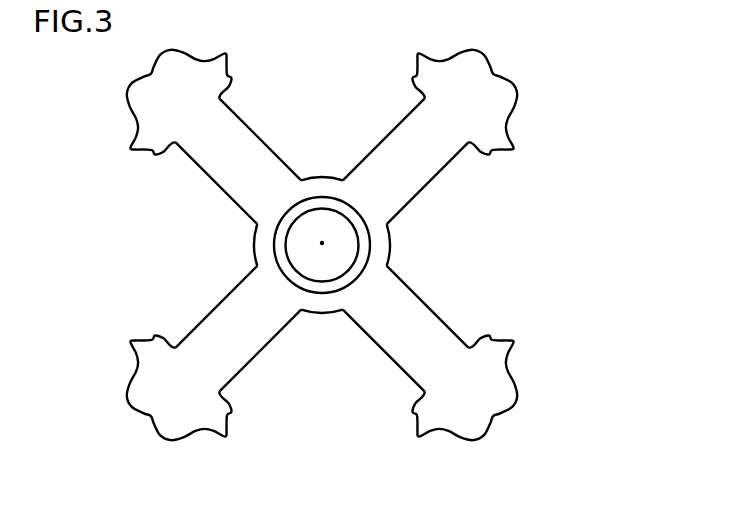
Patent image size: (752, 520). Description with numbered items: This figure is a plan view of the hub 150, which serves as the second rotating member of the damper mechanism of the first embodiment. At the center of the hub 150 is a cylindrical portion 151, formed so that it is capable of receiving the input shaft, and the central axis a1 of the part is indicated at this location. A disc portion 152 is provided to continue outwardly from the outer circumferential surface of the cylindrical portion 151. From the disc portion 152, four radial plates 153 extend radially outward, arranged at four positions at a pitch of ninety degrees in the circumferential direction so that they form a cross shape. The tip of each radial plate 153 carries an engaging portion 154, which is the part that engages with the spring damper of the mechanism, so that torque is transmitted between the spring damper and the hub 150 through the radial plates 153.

The hub 150 is at (558, 177).
The cylindrical portion 151 is at (372, 242).
The disc portion 152 is at (322, 188).
The radial plate 153 is at (253, 167).
The engaging portion 154 is at (150, 108).
The central axis a1 is at (322, 247).